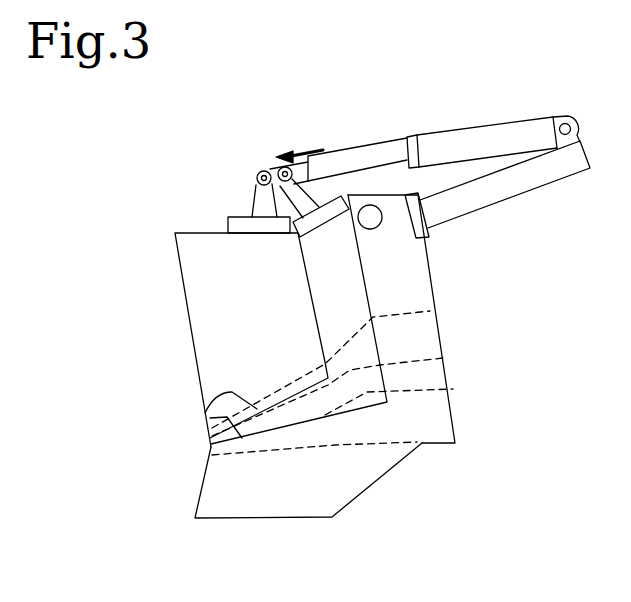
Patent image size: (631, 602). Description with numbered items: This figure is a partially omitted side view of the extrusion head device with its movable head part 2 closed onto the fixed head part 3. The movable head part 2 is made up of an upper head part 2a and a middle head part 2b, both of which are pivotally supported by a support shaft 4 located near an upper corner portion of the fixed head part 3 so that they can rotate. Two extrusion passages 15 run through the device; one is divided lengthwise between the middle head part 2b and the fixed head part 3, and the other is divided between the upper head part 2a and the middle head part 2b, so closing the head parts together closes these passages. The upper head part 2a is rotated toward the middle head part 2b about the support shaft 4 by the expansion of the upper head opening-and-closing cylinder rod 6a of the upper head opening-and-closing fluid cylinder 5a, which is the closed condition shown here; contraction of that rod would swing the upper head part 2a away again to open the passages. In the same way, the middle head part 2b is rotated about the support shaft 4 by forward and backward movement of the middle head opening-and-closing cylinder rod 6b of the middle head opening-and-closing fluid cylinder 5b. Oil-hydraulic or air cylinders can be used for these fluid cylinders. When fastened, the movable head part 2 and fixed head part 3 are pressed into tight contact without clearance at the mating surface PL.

The movable head part 2 is at (233, 128).
The upper head part 2a is at (185, 238).
The middle head part 2b is at (310, 260).
The fixed head part 3 is at (288, 500).
The support shaft 4 is at (372, 216).
The upper head opening-and-closing fluid cylinder 5a is at (488, 128).
The middle head opening-and-closing fluid cylinder 5b is at (520, 128).
The upper head opening-and-closing cylinder rod 6a is at (340, 155).
The middle head opening-and-closing cylinder rod 6b is at (377, 160).
The extrusion passage 15 is at (425, 347).
The mating surface PL is at (210, 427).